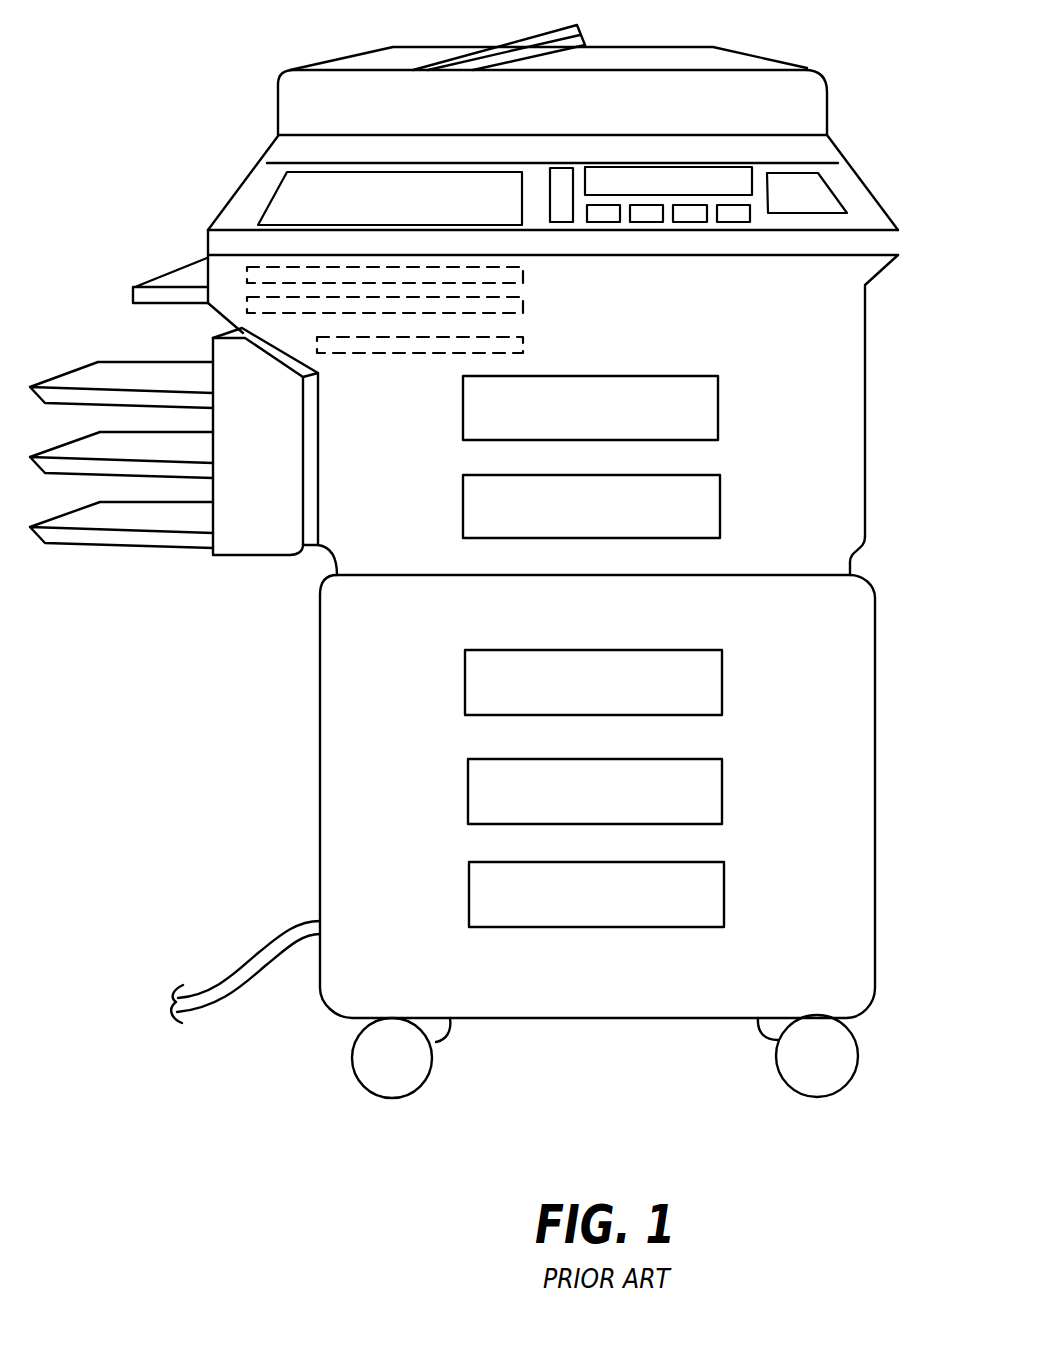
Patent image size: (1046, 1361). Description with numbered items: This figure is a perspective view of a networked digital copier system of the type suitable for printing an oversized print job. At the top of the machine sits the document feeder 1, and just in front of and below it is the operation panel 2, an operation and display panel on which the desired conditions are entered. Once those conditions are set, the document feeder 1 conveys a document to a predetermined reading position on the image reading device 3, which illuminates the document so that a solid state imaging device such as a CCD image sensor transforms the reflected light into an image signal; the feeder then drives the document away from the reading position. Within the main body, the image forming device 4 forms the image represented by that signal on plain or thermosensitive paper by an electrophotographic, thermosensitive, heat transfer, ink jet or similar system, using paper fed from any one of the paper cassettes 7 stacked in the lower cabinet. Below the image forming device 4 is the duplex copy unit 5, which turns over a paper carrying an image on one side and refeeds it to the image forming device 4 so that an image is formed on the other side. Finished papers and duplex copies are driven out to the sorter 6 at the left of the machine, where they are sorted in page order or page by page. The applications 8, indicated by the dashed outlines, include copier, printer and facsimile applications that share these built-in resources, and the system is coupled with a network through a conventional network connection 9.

The document feeder 1 is at (808, 86).
The operation panel 2 is at (287, 172).
The image reading device 3 is at (226, 178).
The image forming device 4 is at (718, 383).
The duplex copy unit 5 is at (720, 503).
The sorter 6 is at (142, 555).
The paper cassettes 7 is at (722, 674).
The applications 8 is at (556, 304).
The network connection 9 is at (238, 958).